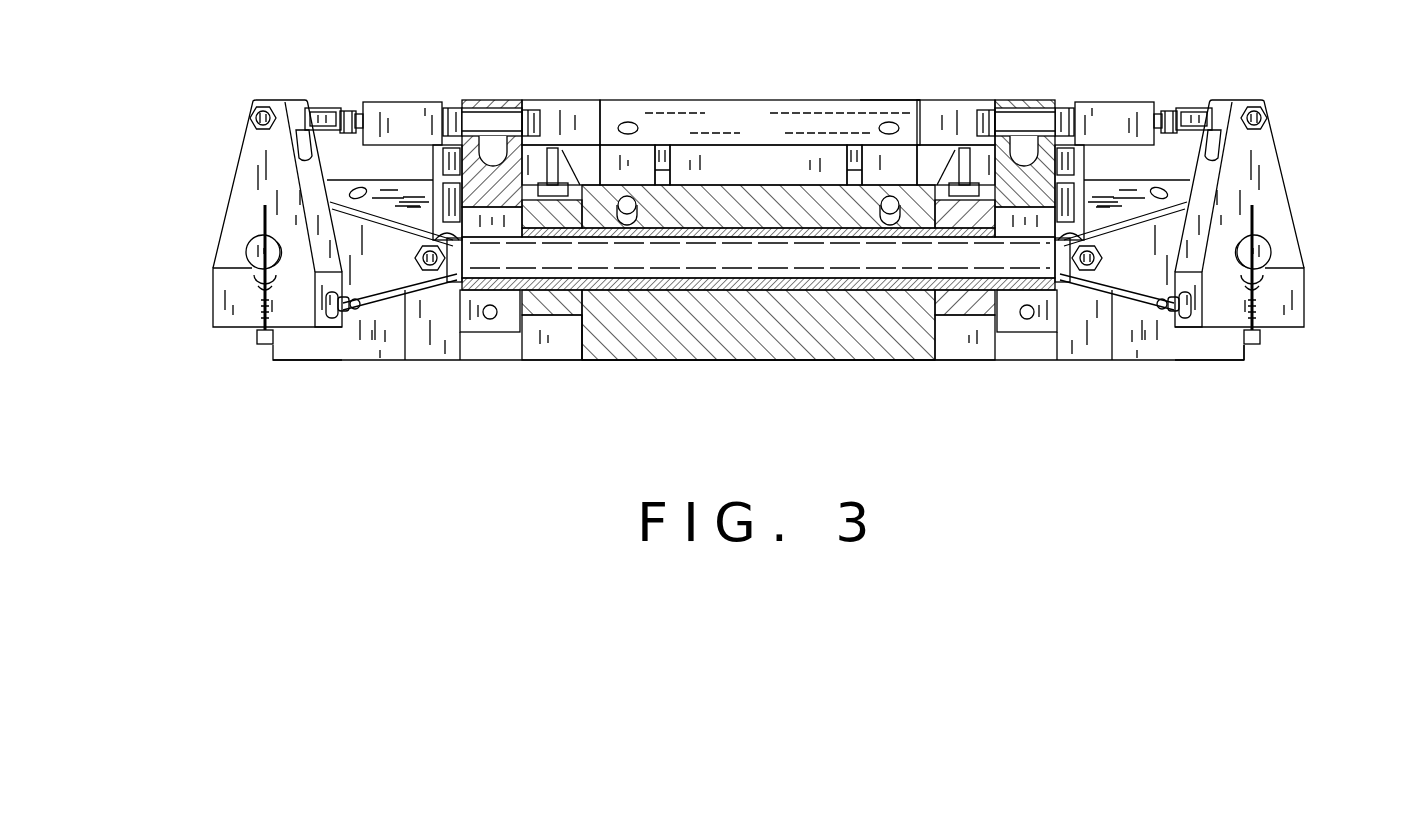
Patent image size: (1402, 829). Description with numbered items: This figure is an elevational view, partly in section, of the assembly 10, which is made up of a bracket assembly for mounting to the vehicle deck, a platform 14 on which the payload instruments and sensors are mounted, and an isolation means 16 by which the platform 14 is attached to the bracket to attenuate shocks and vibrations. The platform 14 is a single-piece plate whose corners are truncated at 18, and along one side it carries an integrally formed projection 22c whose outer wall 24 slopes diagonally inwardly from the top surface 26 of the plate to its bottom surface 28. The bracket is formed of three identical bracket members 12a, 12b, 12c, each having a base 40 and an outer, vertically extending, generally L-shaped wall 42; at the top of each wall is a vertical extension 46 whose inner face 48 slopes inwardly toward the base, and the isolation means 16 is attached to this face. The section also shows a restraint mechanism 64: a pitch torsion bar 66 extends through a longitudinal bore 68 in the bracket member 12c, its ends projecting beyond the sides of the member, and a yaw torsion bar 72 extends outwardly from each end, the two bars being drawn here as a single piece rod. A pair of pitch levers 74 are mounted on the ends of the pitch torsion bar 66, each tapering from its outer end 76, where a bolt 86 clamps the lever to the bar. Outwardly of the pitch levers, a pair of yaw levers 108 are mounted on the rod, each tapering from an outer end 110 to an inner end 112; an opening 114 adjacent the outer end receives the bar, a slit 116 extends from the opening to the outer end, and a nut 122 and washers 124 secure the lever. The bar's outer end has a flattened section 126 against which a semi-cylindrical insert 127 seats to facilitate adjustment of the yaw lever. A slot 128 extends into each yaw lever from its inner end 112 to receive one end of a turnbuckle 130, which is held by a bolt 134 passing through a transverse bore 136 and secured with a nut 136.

The assembly 10 is at (680, 390).
The bracket member 12a is at (1107, 336).
The bracket member 12b is at (412, 348).
The bracket member 12c is at (866, 374).
The platform 14 is at (452, 70).
The isolation means 16 is at (628, 384).
The truncated corner 18 is at (412, 100).
The projection 22c is at (905, 98).
The outer wall 24 is at (730, 127).
The top surface 26 is at (558, 90).
The bottom surface 28 is at (895, 158).
The base 40 is at (337, 363).
The outer wall 42 is at (262, 356).
The vertical extension 46 is at (386, 178).
The inner face 48 is at (412, 196).
The restraint mechanism 64 is at (1253, 50).
The pitch torsion bar 66 is at (759, 270).
The longitudinal bore 68 is at (829, 325).
The yaw torsion bar 72 is at (276, 328).
The pitch lever 74 is at (397, 270).
The outer end 76 is at (556, 153).
The bolt 86 is at (992, 140).
The yaw lever 108 is at (205, 296).
The outer end 110 is at (1348, 337).
The inner end 112 is at (508, 100).
The opening 114 is at (255, 240).
The slit 116 is at (263, 308).
The nut 122 is at (352, 320).
The washers 124 is at (322, 322).
The flattened section 126 is at (254, 272).
The semi-cylindrical insert 127 is at (252, 284).
The slot 128 is at (290, 147).
The turnbuckle 130 is at (303, 108).
The bolt 134 is at (250, 118).
The transverse bore 136 is at (543, 132).